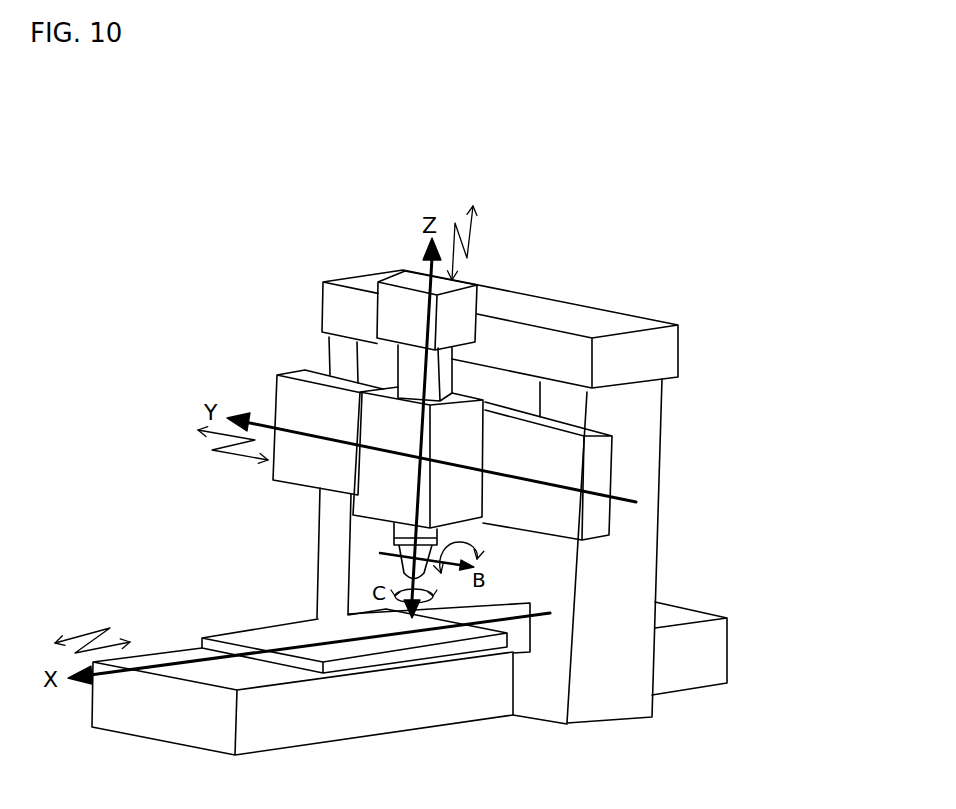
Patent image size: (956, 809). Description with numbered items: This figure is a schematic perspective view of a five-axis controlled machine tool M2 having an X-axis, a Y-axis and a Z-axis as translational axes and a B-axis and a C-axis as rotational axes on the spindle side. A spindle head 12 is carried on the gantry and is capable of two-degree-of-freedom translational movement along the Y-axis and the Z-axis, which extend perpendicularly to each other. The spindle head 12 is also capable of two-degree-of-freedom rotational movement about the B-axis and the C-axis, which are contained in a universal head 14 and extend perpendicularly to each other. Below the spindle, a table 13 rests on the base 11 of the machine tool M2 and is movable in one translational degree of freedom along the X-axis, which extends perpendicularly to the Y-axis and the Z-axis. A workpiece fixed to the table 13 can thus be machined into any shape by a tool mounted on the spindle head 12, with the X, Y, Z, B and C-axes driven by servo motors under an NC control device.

The base (bed) 11 is at (412, 712).
The spindle head 12 is at (407, 561).
The table 13 is at (292, 640).
The universal head 14 is at (472, 532).
The machine tool M2 is at (740, 292).